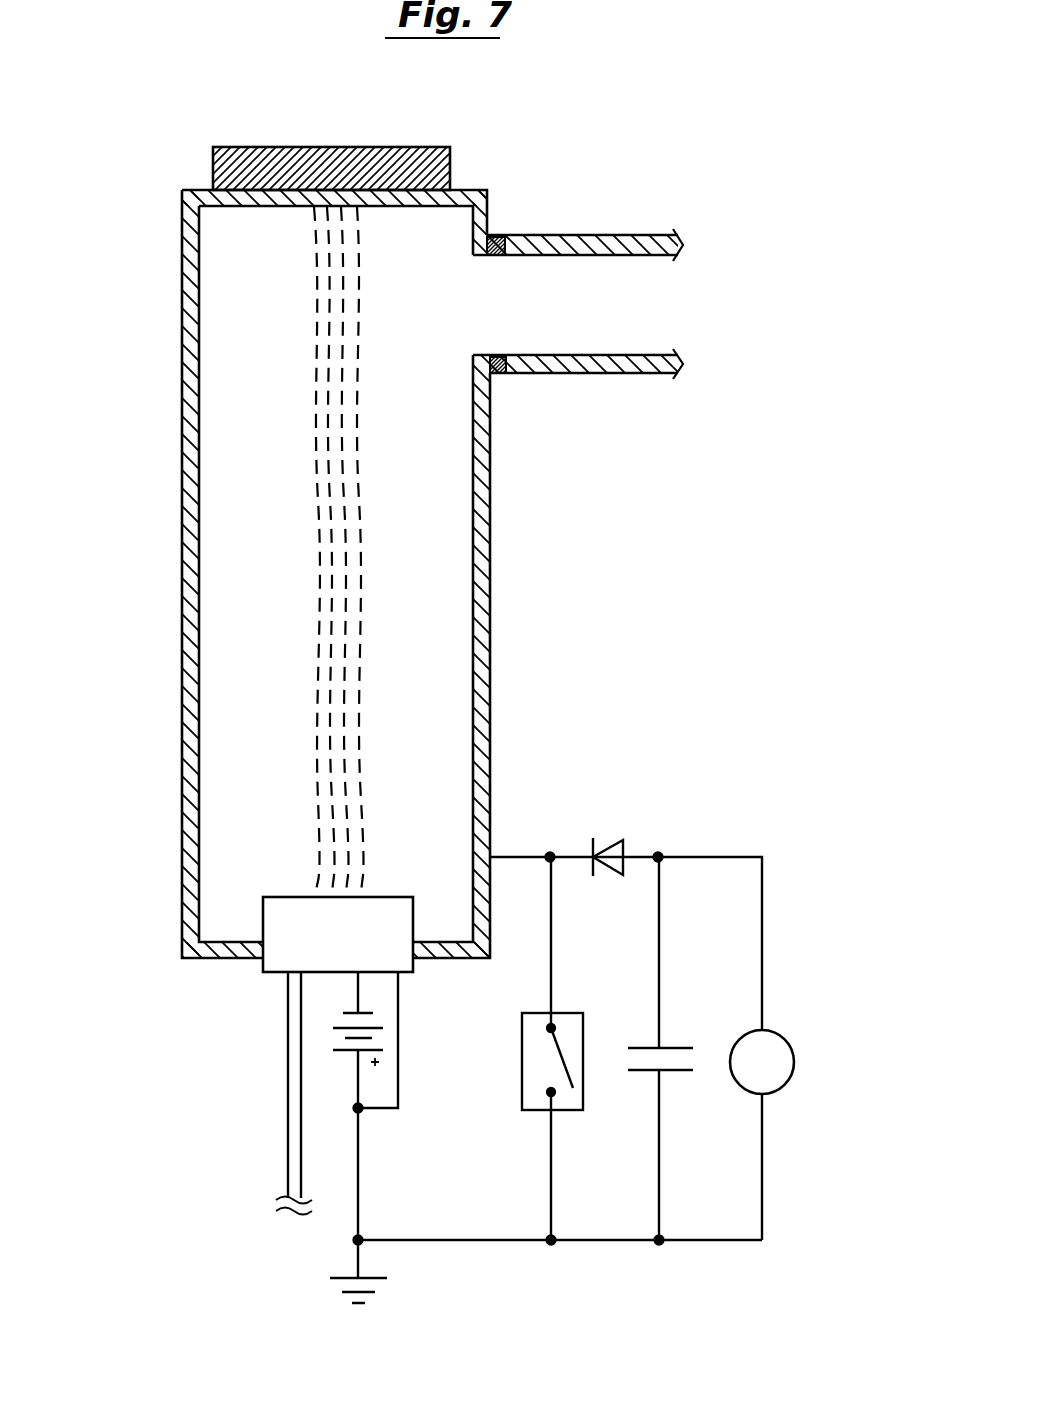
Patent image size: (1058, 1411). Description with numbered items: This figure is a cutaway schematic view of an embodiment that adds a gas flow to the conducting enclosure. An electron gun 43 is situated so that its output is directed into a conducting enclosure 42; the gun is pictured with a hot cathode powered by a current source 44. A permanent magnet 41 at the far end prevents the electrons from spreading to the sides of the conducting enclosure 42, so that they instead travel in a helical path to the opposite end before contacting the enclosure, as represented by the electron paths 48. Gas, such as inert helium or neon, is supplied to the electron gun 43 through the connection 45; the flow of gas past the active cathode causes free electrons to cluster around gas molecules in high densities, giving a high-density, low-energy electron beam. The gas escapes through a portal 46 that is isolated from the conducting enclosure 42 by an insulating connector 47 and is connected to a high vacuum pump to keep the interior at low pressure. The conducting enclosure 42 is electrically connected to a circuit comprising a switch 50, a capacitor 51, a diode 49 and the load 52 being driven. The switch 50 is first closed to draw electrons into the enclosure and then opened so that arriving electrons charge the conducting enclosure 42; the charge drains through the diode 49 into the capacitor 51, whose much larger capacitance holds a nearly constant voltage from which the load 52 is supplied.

The permanent magnet 41 is at (213, 163).
The conducting enclosure 42 is at (182, 398).
The electron gun 43 is at (280, 897).
The current source 44 is at (347, 1050).
The connection 45 is at (288, 1138).
The portal 46 is at (700, 320).
The insulating connector 47 is at (500, 373).
The electron paths 48 is at (358, 390).
The diode 49 is at (600, 848).
The switch 50 is at (583, 1030).
The capacitor 51 is at (675, 1048).
The load 52 is at (795, 1053).